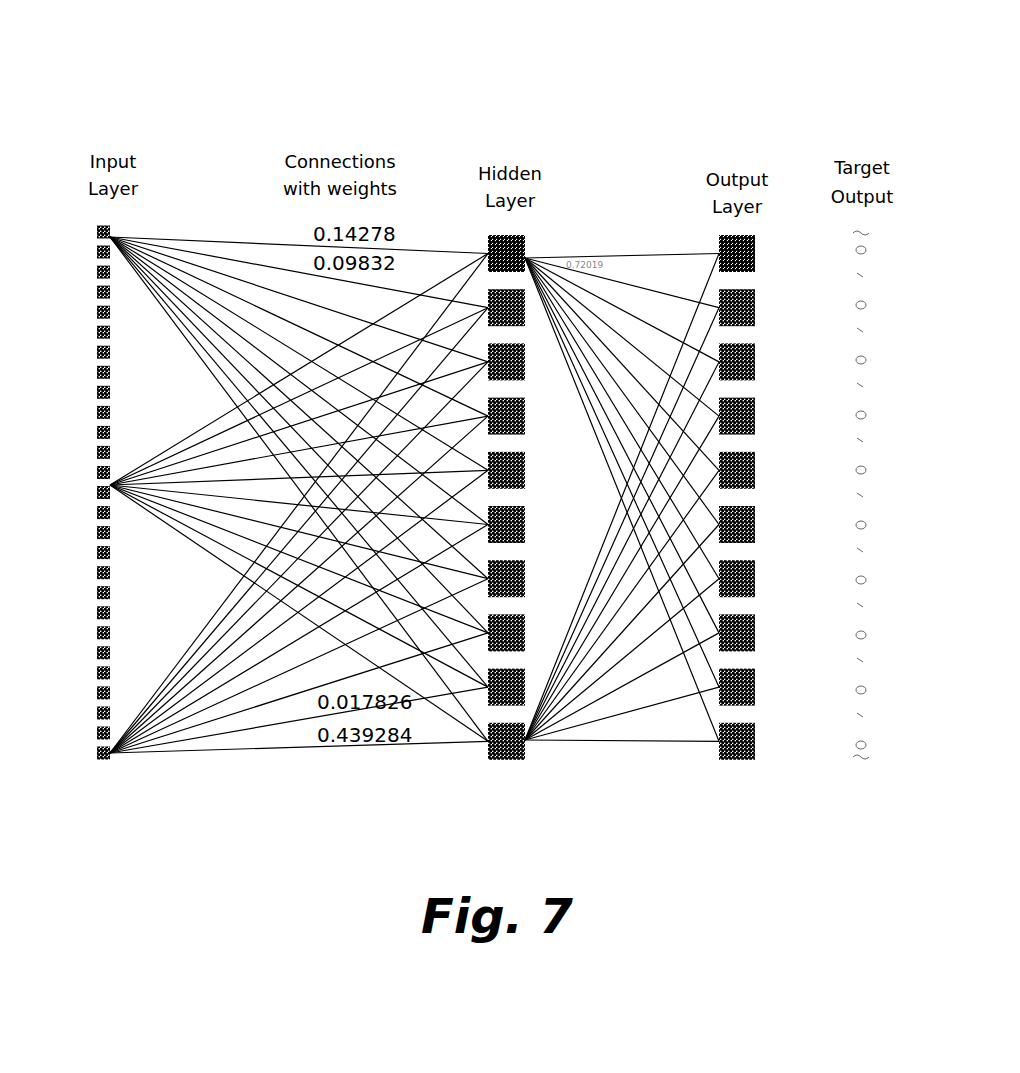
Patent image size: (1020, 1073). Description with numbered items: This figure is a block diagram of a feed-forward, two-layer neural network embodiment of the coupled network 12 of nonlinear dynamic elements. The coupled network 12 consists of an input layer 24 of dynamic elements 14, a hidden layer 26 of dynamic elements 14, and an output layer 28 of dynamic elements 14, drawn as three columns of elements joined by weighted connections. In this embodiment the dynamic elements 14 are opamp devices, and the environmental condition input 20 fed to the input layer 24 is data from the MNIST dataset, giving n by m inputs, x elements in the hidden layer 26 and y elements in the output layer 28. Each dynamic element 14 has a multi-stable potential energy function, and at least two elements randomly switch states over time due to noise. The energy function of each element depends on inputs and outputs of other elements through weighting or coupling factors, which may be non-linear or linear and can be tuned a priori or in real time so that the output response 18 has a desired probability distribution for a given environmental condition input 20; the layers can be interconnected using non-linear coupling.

The coupled network 12 is at (82, 74).
The dynamic element 14 is at (390, 532).
The output response 18 is at (872, 763).
The environmental condition input 20 is at (117, 777).
The input layer 24 is at (105, 787).
The hidden layer 26 is at (470, 777).
The output layer 28 is at (775, 779).